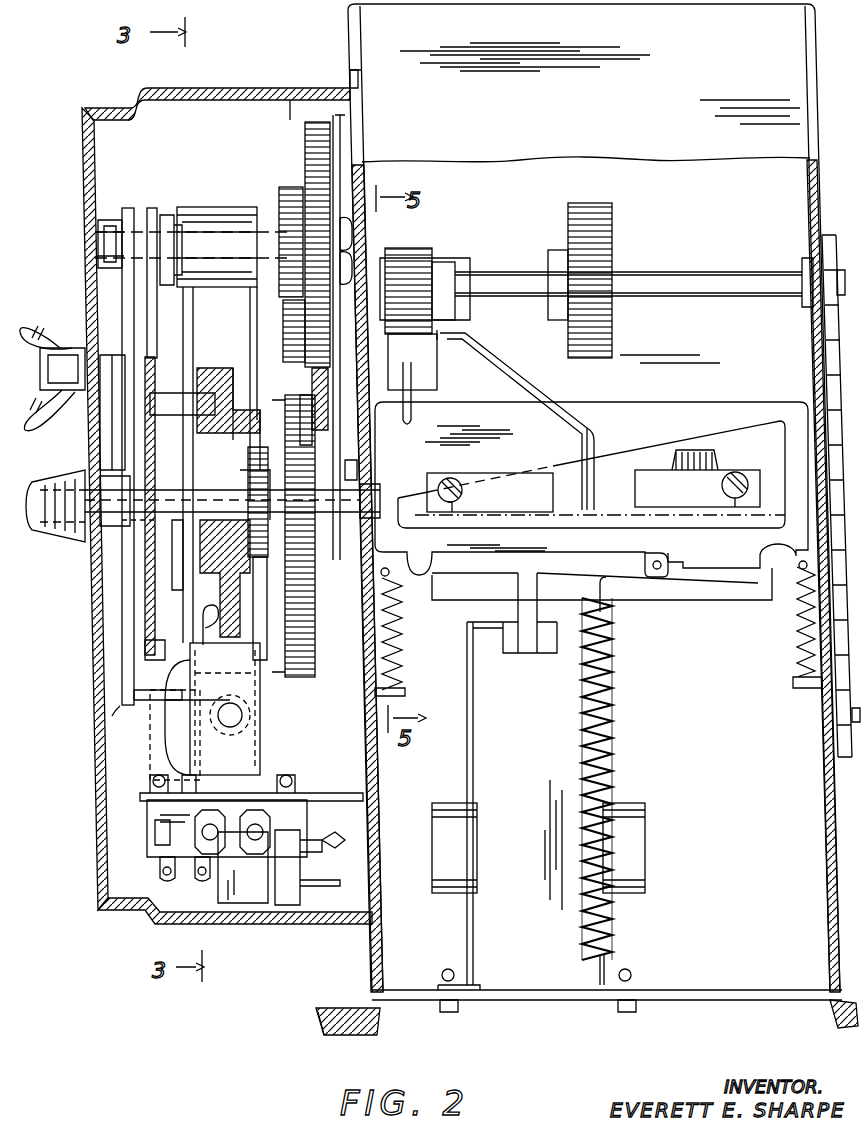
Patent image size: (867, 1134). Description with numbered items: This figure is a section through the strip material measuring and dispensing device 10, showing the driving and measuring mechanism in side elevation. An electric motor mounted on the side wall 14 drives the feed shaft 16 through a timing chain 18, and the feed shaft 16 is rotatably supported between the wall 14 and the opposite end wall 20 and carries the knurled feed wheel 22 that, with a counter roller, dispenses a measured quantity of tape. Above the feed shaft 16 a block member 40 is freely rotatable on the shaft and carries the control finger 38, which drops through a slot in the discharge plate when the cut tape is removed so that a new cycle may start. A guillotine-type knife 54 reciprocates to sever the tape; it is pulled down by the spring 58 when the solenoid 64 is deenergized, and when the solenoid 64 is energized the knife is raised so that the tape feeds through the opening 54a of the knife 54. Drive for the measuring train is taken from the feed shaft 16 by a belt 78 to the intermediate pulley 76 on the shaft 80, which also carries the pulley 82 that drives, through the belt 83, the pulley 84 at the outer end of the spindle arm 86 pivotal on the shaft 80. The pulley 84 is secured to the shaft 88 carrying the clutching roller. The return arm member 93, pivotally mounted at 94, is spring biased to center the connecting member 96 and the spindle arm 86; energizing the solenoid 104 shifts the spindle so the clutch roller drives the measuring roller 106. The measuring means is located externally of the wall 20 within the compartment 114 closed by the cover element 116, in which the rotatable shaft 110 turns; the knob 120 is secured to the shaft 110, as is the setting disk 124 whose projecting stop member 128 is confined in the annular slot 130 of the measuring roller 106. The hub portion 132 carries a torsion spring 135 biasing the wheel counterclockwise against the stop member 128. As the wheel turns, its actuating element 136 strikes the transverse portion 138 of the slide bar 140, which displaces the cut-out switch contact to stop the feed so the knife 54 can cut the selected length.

The strip material measuring and dispensing device 10 is at (316, 68).
The side wall 14 is at (820, 137).
The feed shaft 16 is at (678, 290).
The timing chain 18 is at (828, 352).
The end wall 20 is at (218, 500).
The feed wheel 22 is at (612, 222).
The control finger 38 is at (540, 380).
The block member 40 is at (415, 250).
The guillotine-type knife 54 is at (666, 402).
The opening of the knife 54a is at (626, 462).
The spring 58 is at (608, 725).
The solenoid 64 is at (465, 750).
The intermediate pulley 76 is at (292, 118).
The belt 78 is at (340, 117).
The shaft 80 is at (222, 232).
The pulley 82 is at (283, 200).
The belt 83 is at (296, 158).
The pulley 84 is at (308, 660).
The spindle arm 86 is at (250, 325).
The shaft 88 is at (306, 590).
The return arm member 93 is at (128, 710).
The pivot 94 is at (86, 452).
The central connecting member 96 is at (226, 732).
The solenoid 104 is at (290, 738).
The measuring roller 106 is at (221, 362).
The rotatable shaft 110 is at (345, 486).
The compartment 114 is at (113, 126).
The cover element 116 is at (84, 160).
The knob 120 is at (70, 545).
The setting disk 124 is at (147, 617).
The stop member 128 is at (190, 415).
The slot 130 is at (225, 709).
The hub portion 132 is at (282, 572).
The torsion spring 135 is at (362, 470).
The actuating element 136 is at (300, 404).
The transverse portion 138 is at (341, 399).
The slide bar 140 is at (348, 414).